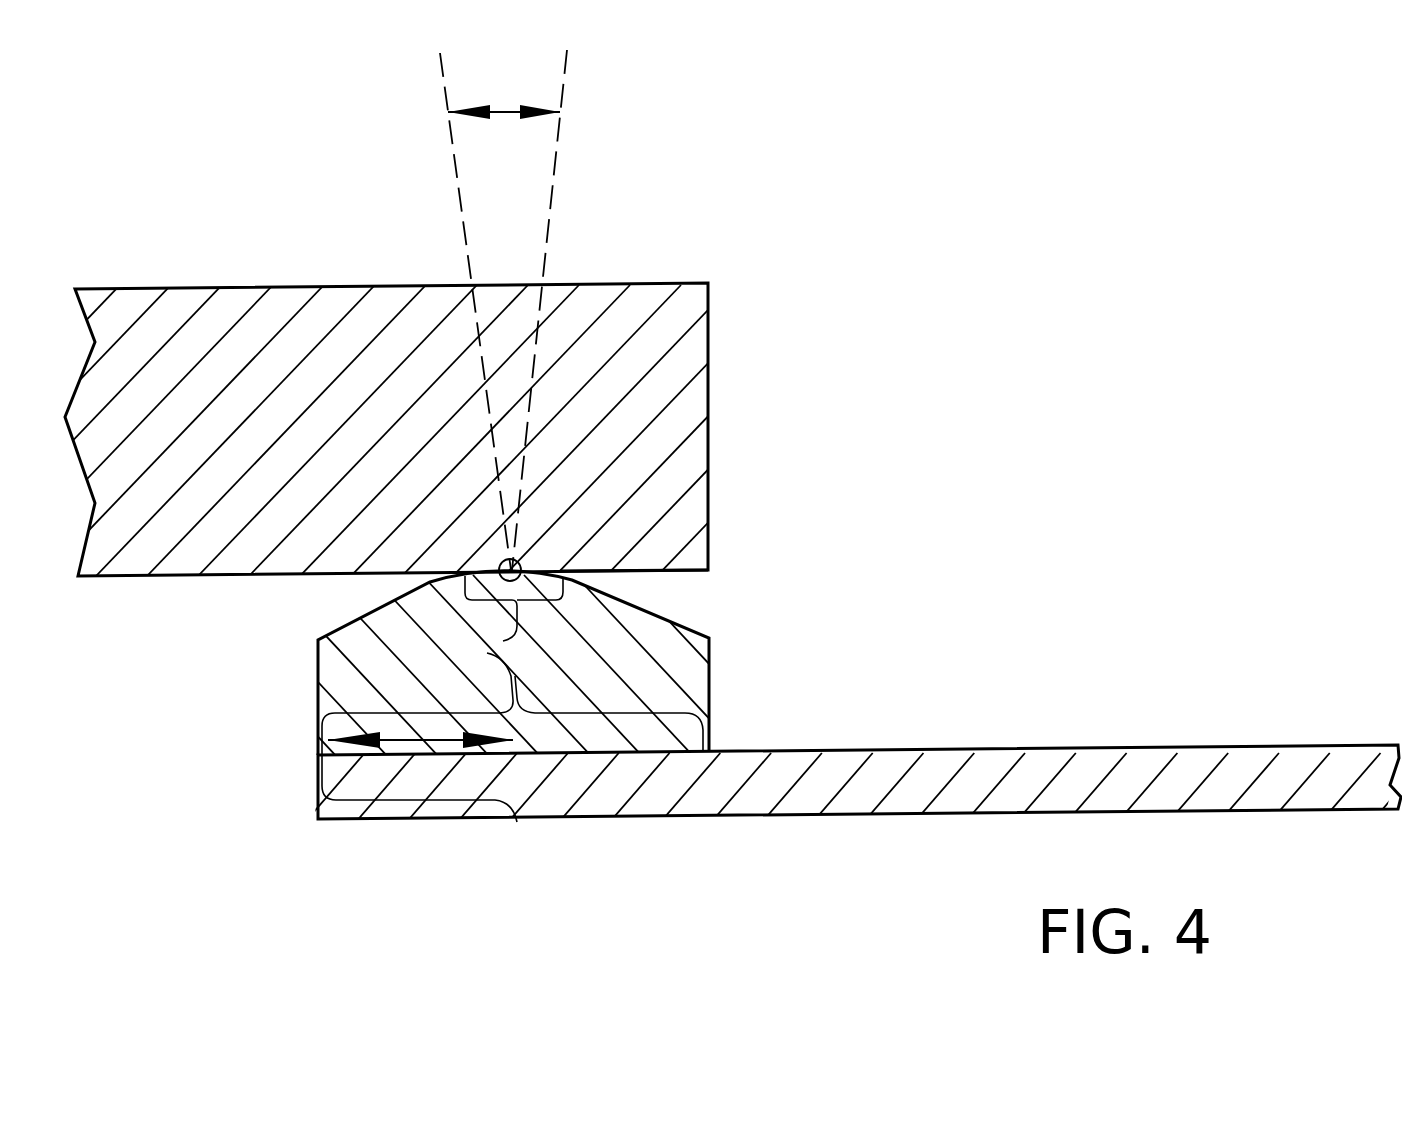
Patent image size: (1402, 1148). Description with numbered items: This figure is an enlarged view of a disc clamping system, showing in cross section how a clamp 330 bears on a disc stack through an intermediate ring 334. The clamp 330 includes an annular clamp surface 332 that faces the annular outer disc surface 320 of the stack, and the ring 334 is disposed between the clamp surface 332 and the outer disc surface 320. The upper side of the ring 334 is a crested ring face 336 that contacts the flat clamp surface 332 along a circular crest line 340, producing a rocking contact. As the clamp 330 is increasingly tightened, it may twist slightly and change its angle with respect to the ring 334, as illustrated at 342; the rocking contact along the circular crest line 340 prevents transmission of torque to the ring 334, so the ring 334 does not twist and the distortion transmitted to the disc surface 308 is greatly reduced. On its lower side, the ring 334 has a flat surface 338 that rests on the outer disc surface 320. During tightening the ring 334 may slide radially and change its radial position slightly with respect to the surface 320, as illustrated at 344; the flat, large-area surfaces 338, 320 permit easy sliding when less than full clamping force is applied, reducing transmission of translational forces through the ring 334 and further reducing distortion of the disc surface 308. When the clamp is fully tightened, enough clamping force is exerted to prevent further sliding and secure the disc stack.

The disc surface 308 is at (953, 749).
The annular outer disc surface 320 is at (517, 822).
The clamp 330 is at (708, 312).
The annular clamp surface 332 is at (622, 571).
The ring 334 is at (709, 678).
The crested ring face 336 is at (503, 641).
The flat ring surface 338 is at (487, 653).
The circular crest line 340 is at (517, 561).
The clamp angle change 342 is at (505, 112).
The radial sliding 344 is at (411, 756).